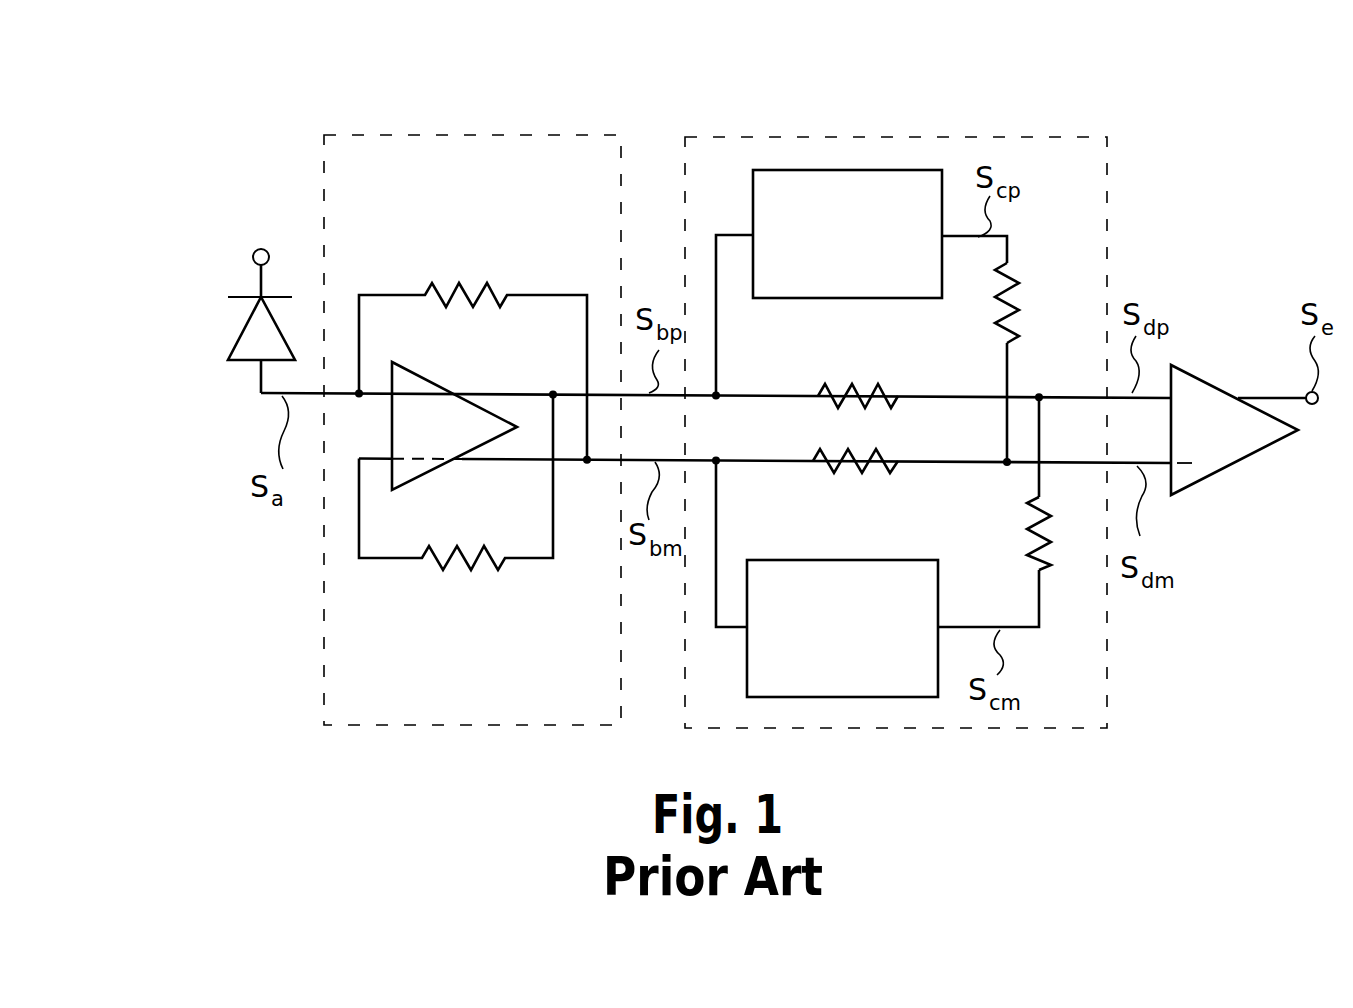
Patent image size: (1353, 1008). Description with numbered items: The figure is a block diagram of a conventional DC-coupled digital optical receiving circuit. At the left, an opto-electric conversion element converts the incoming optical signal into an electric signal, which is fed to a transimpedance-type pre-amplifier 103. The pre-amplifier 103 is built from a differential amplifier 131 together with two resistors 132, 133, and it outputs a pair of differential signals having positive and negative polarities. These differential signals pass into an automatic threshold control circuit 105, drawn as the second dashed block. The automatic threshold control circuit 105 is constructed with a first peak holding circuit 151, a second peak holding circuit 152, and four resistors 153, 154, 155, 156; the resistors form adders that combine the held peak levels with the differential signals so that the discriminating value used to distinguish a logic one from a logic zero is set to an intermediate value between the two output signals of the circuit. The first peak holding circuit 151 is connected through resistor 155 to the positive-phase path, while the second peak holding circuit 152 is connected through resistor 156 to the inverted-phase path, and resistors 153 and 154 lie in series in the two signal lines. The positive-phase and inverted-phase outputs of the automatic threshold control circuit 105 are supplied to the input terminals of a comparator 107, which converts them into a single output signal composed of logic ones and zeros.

The preamplifier 103 is at (233, 372).
The automatic threshold control (ATC) circuit 105 is at (1072, 137).
The comparator 107 is at (1242, 470).
The differential amplifier 131 is at (430, 375).
The resistor 132 is at (458, 280).
The resistor 133 is at (462, 578).
The first peak holding circuit 151 is at (888, 298).
The second peak holding circuit 152 is at (880, 562).
The resistor 153 is at (857, 382).
The resistor 154 is at (833, 482).
The resistor 155 is at (1033, 300).
The resistor 156 is at (1018, 535).